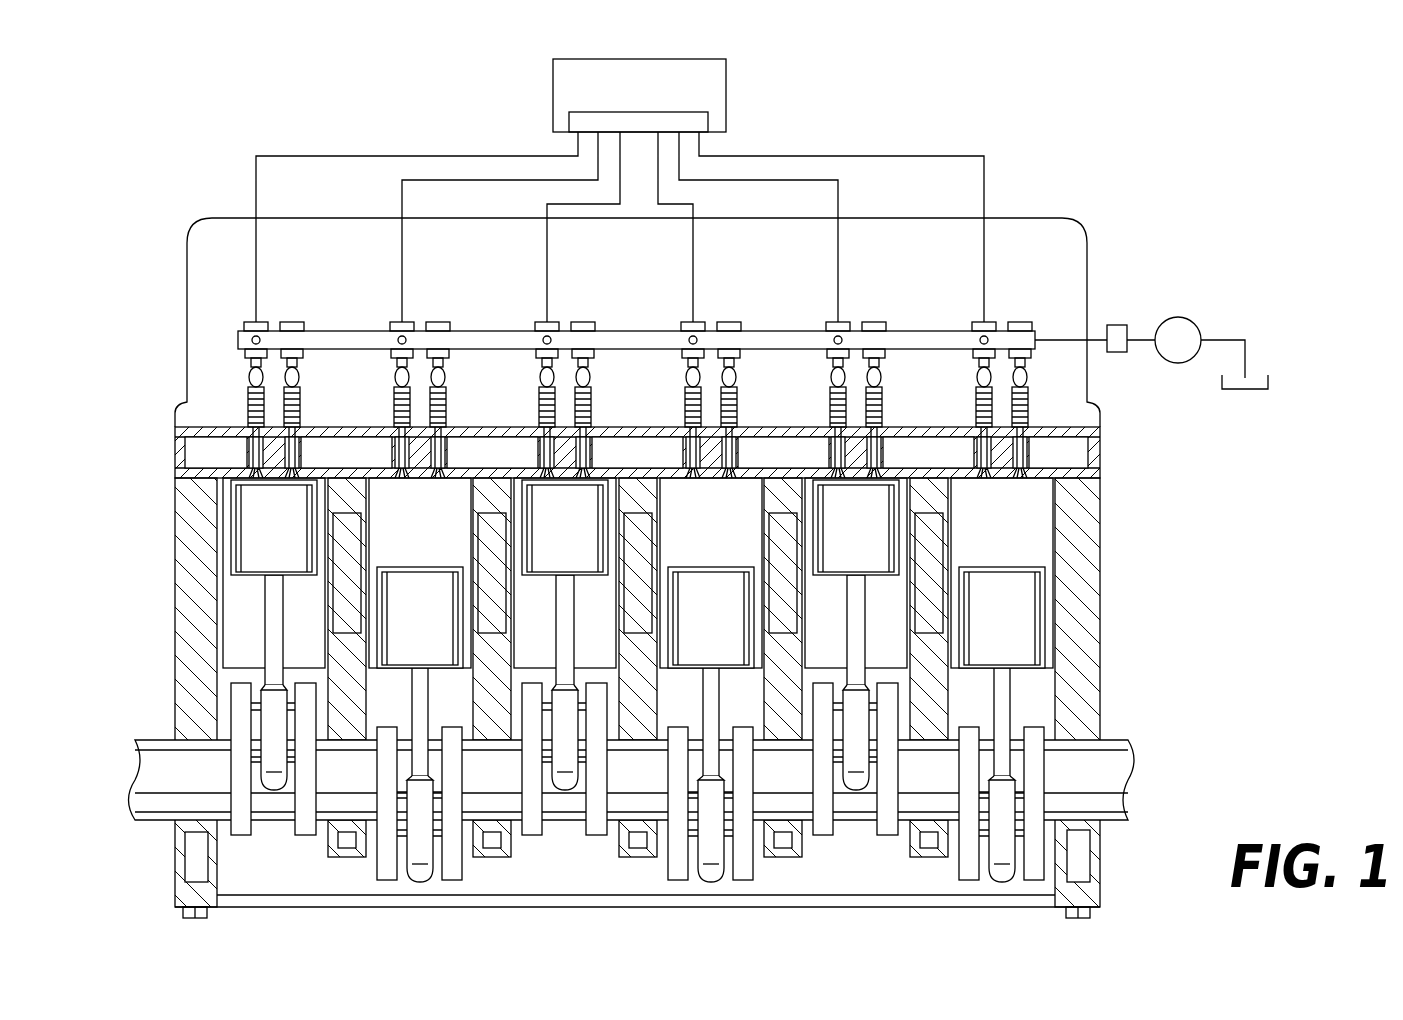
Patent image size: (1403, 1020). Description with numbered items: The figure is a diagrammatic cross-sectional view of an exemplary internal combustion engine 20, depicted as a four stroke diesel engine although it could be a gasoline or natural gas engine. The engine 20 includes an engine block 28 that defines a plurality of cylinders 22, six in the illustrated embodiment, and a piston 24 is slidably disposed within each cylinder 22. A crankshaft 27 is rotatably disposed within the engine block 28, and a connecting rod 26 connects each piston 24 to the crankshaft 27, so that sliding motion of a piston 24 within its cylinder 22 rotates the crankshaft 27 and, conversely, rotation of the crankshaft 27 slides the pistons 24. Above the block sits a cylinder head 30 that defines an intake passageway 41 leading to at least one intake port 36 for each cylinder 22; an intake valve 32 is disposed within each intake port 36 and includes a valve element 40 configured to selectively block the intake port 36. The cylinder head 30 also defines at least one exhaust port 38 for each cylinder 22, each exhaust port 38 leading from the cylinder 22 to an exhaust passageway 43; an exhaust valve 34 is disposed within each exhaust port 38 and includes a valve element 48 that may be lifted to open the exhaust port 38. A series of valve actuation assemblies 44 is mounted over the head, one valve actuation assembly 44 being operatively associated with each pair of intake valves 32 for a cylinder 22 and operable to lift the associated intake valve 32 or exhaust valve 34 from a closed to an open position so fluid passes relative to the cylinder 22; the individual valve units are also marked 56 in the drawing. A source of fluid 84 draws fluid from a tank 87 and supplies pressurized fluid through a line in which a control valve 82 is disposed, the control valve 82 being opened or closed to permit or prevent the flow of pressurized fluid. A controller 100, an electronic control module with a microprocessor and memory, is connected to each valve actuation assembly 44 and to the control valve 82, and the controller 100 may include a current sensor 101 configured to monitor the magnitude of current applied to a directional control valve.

The internal combustion engine 20 is at (1153, 215).
The cylinder 22 is at (285, 638).
The piston 24 is at (257, 562).
The connecting rod 26 is at (275, 655).
The crankshaft 27 is at (153, 795).
The engine block 28 is at (175, 497).
The cylinder head 30 is at (1100, 455).
The intake valve 32 is at (299, 427).
The exhaust valve 34 is at (540, 427).
The intake port 36 is at (302, 480).
The exhaust port 38 is at (288, 478).
The valve element 40 is at (272, 480).
The intake passageway 41 is at (331, 466).
The exhaust passageway 43 is at (477, 466).
The valve actuation assembly 44 is at (283, 322).
The valve element 48 is at (252, 470).
The fuel injector 56 is at (249, 384).
The control valve 82 is at (1117, 352).
The source of fluid 84 is at (1178, 318).
The tank 87 is at (1268, 378).
The controller 100 is at (621, 97).
The current sensor 101 is at (697, 118).